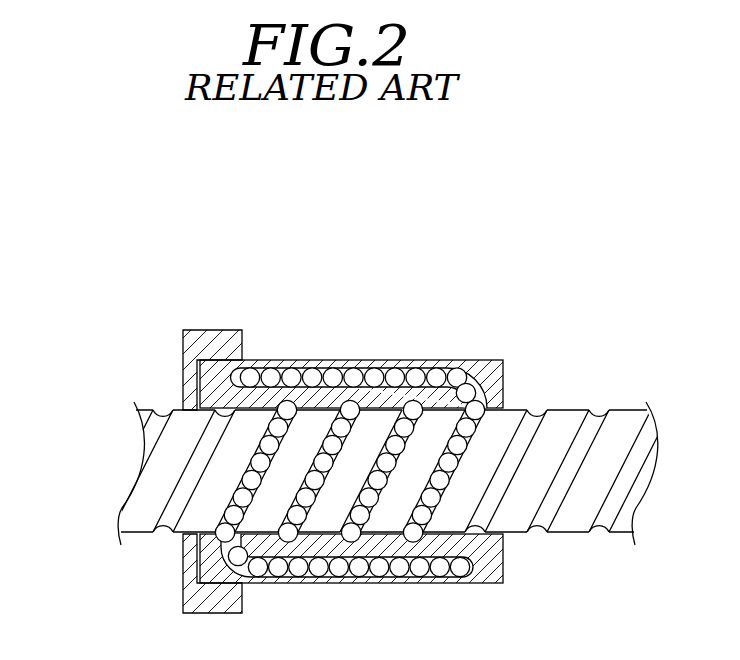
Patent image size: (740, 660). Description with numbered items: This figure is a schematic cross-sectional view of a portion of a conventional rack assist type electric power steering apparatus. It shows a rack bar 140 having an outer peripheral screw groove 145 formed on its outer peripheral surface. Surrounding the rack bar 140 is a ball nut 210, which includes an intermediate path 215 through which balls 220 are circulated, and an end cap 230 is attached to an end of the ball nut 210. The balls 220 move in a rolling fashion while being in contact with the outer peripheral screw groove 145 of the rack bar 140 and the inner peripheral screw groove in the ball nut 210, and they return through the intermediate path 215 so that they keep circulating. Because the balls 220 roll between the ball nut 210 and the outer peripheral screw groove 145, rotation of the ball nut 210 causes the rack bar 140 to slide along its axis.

The rack bar 140 is at (137, 502).
The outer peripheral screw groove 145 is at (172, 522).
The ball nut 210 is at (490, 578).
The intermediate path 215 is at (234, 378).
The balls 220 is at (393, 376).
The end cap 230 is at (213, 337).